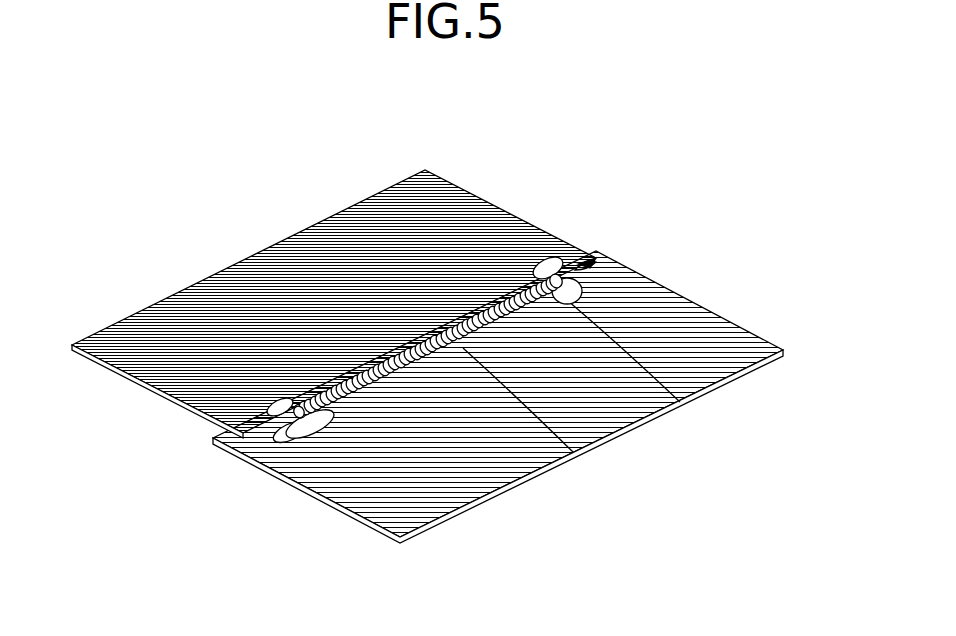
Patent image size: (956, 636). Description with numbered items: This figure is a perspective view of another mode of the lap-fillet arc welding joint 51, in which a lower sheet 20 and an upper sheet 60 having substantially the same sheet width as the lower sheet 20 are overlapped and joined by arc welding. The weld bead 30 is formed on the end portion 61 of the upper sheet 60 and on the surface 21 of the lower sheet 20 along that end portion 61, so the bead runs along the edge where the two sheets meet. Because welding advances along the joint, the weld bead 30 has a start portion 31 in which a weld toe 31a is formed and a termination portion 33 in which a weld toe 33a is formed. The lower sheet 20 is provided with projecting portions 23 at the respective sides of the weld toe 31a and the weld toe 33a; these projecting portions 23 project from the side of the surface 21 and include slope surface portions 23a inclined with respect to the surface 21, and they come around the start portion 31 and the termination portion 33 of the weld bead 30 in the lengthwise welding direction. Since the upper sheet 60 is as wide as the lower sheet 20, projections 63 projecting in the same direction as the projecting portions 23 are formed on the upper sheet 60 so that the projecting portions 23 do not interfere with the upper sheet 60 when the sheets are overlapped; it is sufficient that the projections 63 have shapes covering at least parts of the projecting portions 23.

The lap-fillet arc welding joint 51 is at (188, 183).
The lower sheet 20 is at (731, 320).
The surface 21 is at (573, 455).
The projecting portions 23 is at (580, 304).
The slope surface portions 23a is at (600, 256).
The weld bead 30 is at (400, 345).
The start portion 31 is at (560, 252).
The weld toe 31a is at (679, 401).
The termination portion 33 is at (303, 417).
The weld toe 33a is at (313, 420).
The upper sheet 60 is at (483, 200).
The end portion 61 is at (588, 257).
The projections 63 is at (533, 242).